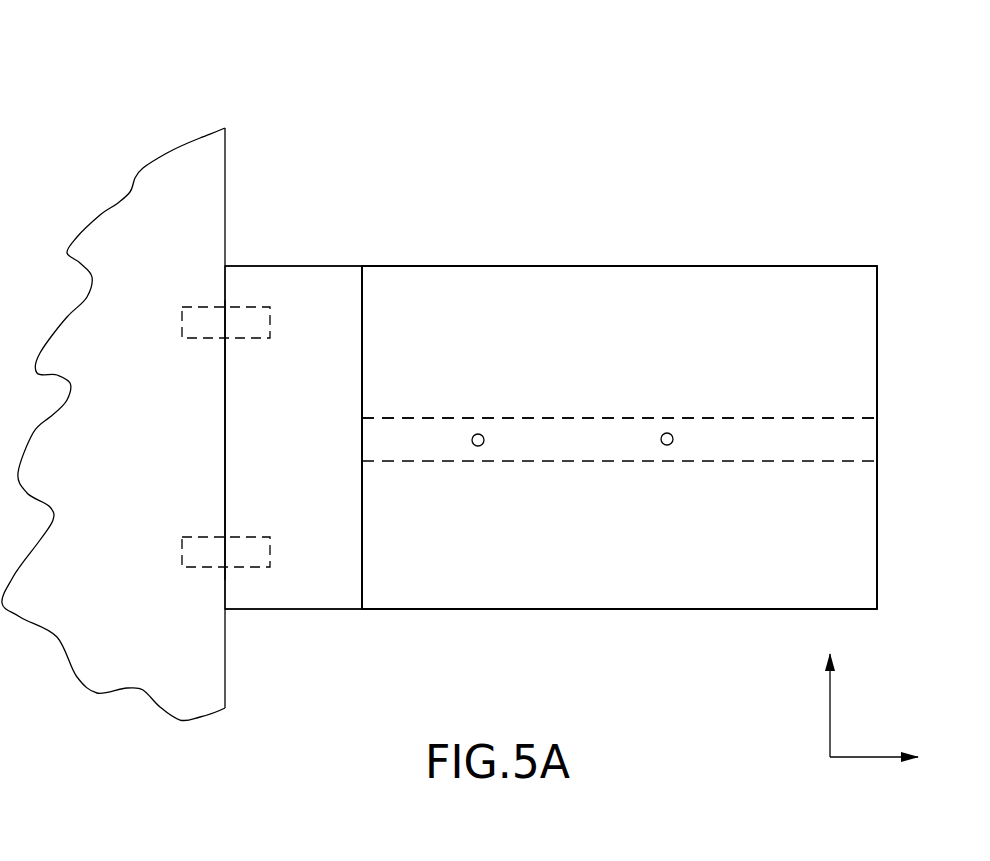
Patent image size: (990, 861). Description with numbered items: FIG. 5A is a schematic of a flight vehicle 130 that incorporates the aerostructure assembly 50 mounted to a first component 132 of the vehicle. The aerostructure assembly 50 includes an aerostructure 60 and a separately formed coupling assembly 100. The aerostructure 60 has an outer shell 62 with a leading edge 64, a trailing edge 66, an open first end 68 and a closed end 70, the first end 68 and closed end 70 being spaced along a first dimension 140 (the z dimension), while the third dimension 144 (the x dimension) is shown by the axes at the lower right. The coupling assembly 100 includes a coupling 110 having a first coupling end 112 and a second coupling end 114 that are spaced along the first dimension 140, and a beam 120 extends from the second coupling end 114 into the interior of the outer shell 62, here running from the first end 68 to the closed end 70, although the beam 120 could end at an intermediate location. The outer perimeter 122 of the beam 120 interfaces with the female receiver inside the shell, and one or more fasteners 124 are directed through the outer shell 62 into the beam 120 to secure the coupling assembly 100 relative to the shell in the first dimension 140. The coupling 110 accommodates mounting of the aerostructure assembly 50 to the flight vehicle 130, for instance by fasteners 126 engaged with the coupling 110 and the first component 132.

The aerostructure assembly 50 is at (662, 205).
The aerostructure 60 is at (747, 235).
The outer shell 62 is at (787, 284).
The leading edge 64 is at (515, 266).
The trailing edge 66 is at (617, 609).
The first end 68 is at (362, 340).
The closed end 70 is at (877, 338).
The coupling assembly 100 is at (287, 199).
The coupling 110 is at (310, 423).
The first coupling end 112 is at (226, 458).
The second coupling end 114 is at (362, 575).
The beam 120 is at (558, 440).
The outer perimeter of the beam 122 is at (712, 418).
The fasteners 124 is at (478, 446).
The fasteners 126 is at (232, 340).
The flight vehicle 130 is at (499, 109).
The first component 132 is at (140, 398).
The first dimension 140 is at (872, 757).
The third dimension 144 is at (830, 705).